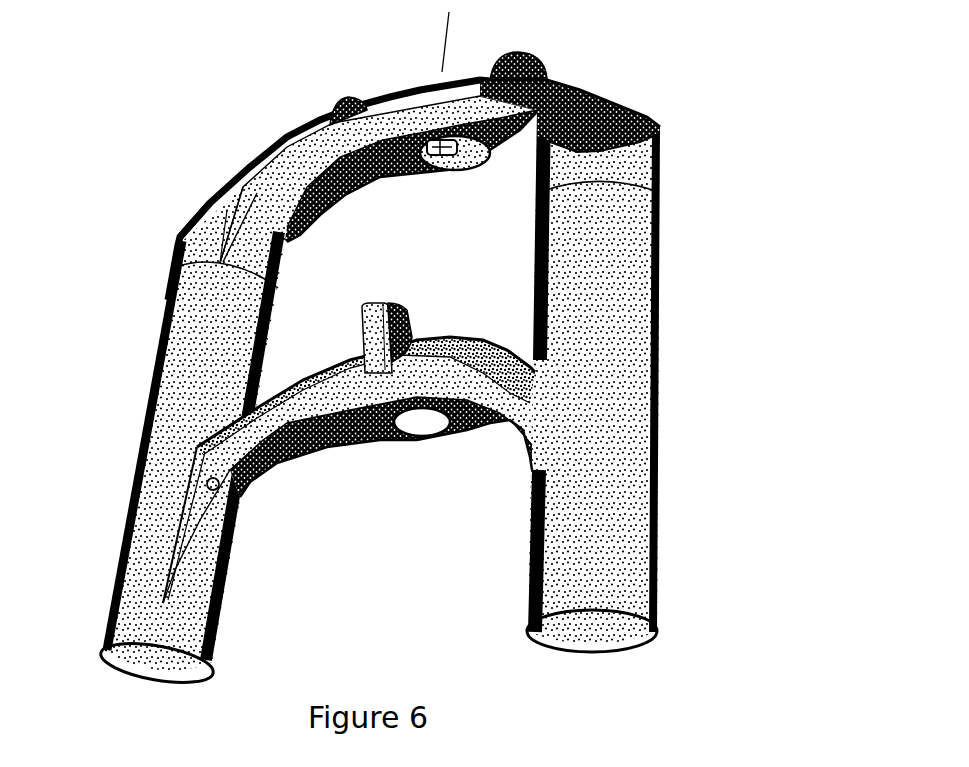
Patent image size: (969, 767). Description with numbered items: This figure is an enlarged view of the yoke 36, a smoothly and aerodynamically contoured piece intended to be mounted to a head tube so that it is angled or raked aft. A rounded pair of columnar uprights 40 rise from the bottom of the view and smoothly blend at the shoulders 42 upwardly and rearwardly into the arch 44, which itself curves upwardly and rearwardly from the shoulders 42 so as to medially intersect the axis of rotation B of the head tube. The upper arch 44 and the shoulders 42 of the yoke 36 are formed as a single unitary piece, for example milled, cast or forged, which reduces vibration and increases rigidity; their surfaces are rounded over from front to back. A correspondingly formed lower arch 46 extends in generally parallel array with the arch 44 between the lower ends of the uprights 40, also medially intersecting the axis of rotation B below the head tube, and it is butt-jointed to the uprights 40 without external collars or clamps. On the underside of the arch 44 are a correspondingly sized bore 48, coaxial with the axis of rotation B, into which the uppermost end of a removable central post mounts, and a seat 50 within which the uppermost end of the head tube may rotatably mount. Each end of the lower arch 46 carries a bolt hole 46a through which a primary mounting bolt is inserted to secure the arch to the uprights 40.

The yoke 36 is at (406, 346).
The columnar uprights 40 is at (123, 532).
The shoulders 42 is at (195, 227).
The arch 44 is at (363, 157).
The lower arch 46 is at (349, 453).
The bolt hole 46a is at (218, 490).
The bore 48 is at (458, 153).
The seat 50 is at (418, 163).
The axis of rotation B is at (446, 43).